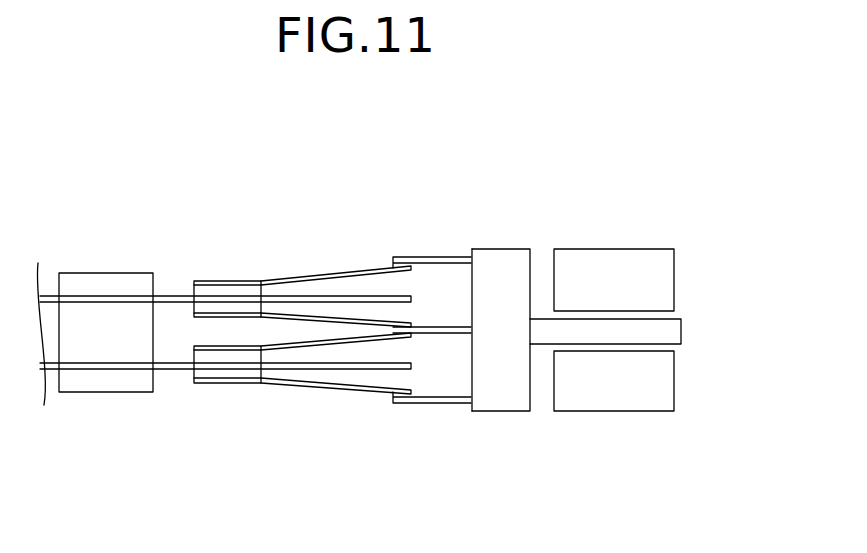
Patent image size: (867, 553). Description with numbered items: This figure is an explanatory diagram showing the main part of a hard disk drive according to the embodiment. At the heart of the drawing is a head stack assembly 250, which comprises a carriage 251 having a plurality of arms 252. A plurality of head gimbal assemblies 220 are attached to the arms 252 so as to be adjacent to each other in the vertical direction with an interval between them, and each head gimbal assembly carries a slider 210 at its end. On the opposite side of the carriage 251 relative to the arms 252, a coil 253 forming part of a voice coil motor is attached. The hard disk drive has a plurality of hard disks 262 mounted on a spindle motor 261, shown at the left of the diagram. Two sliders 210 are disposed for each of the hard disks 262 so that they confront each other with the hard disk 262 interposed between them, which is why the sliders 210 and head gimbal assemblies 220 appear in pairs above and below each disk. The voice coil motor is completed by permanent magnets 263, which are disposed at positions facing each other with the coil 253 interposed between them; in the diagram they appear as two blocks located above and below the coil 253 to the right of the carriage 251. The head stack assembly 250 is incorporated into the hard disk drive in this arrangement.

The slider 210 is at (192, 284).
The head gimbal assembly 220 is at (318, 274).
The head stack assembly 250 is at (502, 249).
The carriage 251 is at (483, 248).
The arm 252 is at (409, 257).
The coil 253 is at (665, 332).
The spindle motor 261 is at (87, 280).
The hard disk 262 is at (163, 296).
The permanent magnet 263 is at (603, 249).